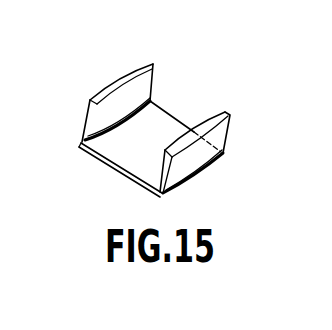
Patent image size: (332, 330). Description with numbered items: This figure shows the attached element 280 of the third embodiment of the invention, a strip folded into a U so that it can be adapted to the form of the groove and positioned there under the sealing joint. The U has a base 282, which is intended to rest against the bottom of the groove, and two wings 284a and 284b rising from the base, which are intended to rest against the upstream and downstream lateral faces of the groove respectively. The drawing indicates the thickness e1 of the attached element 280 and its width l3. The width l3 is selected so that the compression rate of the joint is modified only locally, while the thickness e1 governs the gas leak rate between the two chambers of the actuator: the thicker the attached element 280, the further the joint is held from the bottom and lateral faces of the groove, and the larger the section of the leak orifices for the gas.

The attached element 280 is at (196, 74).
The base 282 is at (123, 152).
The wing 284a is at (125, 94).
The wing 284b is at (222, 137).
The thickness e1 is at (128, 196).
The width l3 is at (163, 193).